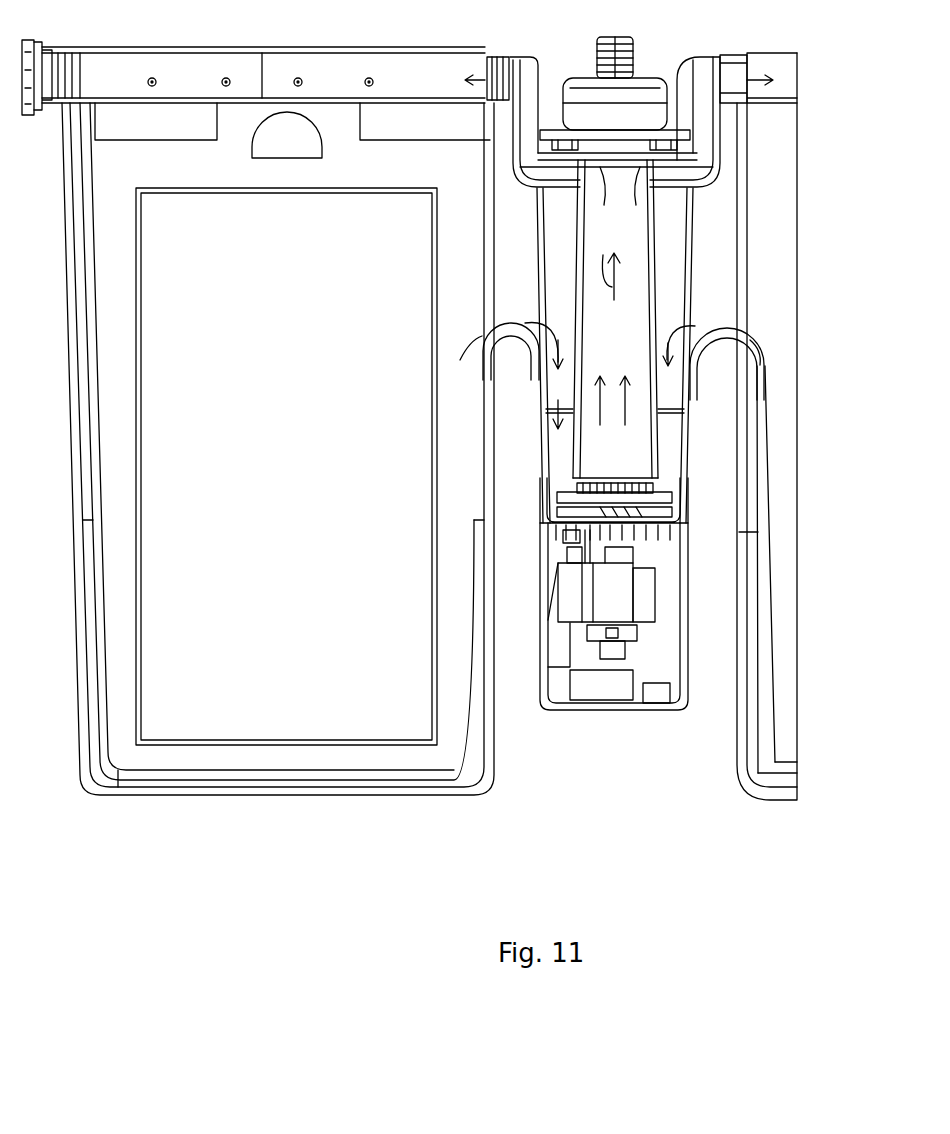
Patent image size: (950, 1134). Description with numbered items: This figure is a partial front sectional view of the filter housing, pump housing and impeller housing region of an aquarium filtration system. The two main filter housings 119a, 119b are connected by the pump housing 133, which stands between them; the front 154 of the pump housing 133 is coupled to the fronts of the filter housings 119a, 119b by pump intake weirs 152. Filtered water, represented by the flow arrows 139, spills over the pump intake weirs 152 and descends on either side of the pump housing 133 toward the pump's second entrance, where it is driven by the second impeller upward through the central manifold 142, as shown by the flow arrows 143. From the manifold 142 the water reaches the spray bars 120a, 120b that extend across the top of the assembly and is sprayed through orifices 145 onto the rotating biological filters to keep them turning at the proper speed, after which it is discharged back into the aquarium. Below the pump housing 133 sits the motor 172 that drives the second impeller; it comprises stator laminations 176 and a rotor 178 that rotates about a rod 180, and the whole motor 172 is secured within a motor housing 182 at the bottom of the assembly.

The main filter housing 119a is at (298, 797).
The main filter housing 119b is at (765, 802).
The spray bar 120a is at (425, 72).
The spray bar 120b is at (780, 63).
The orifices 145 is at (226, 74).
The front of the pump housing 154 is at (675, 228).
The central manifold 142 is at (640, 361).
The flow arrows 143 is at (617, 233).
The pump intake weirs 152 is at (513, 363).
The flow arrows 139 is at (508, 318).
The pump housing 133 is at (697, 483).
The motor 172 is at (582, 640).
The rotor 178 is at (620, 583).
The stator laminations 176 is at (645, 608).
The rod 180 is at (627, 633).
The motor housing 182 is at (590, 712).